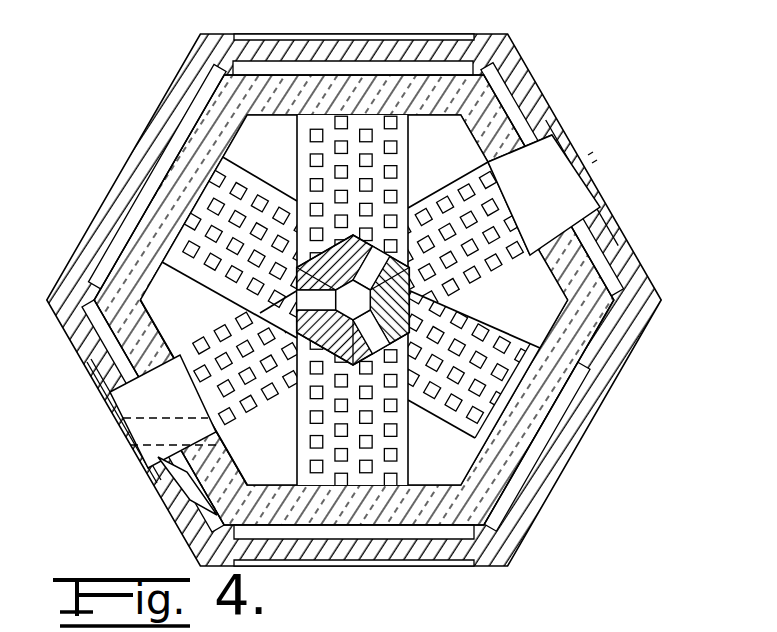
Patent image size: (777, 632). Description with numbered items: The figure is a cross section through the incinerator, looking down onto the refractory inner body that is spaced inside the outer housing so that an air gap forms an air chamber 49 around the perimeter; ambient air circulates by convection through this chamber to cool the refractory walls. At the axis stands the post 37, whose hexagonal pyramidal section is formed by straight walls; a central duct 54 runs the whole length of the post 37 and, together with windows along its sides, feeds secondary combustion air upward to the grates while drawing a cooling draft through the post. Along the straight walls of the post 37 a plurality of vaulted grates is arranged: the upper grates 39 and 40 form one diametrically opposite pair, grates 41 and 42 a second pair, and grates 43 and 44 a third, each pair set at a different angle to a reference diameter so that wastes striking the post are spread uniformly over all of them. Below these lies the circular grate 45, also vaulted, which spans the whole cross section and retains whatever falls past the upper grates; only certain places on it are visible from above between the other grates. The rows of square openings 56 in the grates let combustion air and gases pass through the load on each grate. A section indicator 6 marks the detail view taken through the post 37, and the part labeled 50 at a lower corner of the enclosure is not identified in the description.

The vaulted grate 39 is at (302, 135).
The vaulted grate 40 is at (354, 477).
The vaulted grate 42 is at (200, 213).
The vaulted grate 44 is at (203, 385).
The circular grate 45 is at (487, 336).
The openings 56 is at (487, 200).
The post 37 is at (207, 400).
The vaulted grate 43 is at (483, 222).
The vaulted grate 41 is at (480, 406).
The air chamber 49 is at (507, 485).
The corner block 50 is at (197, 492).
The central duct 54 is at (366, 309).
The section line 6 is at (318, 300).